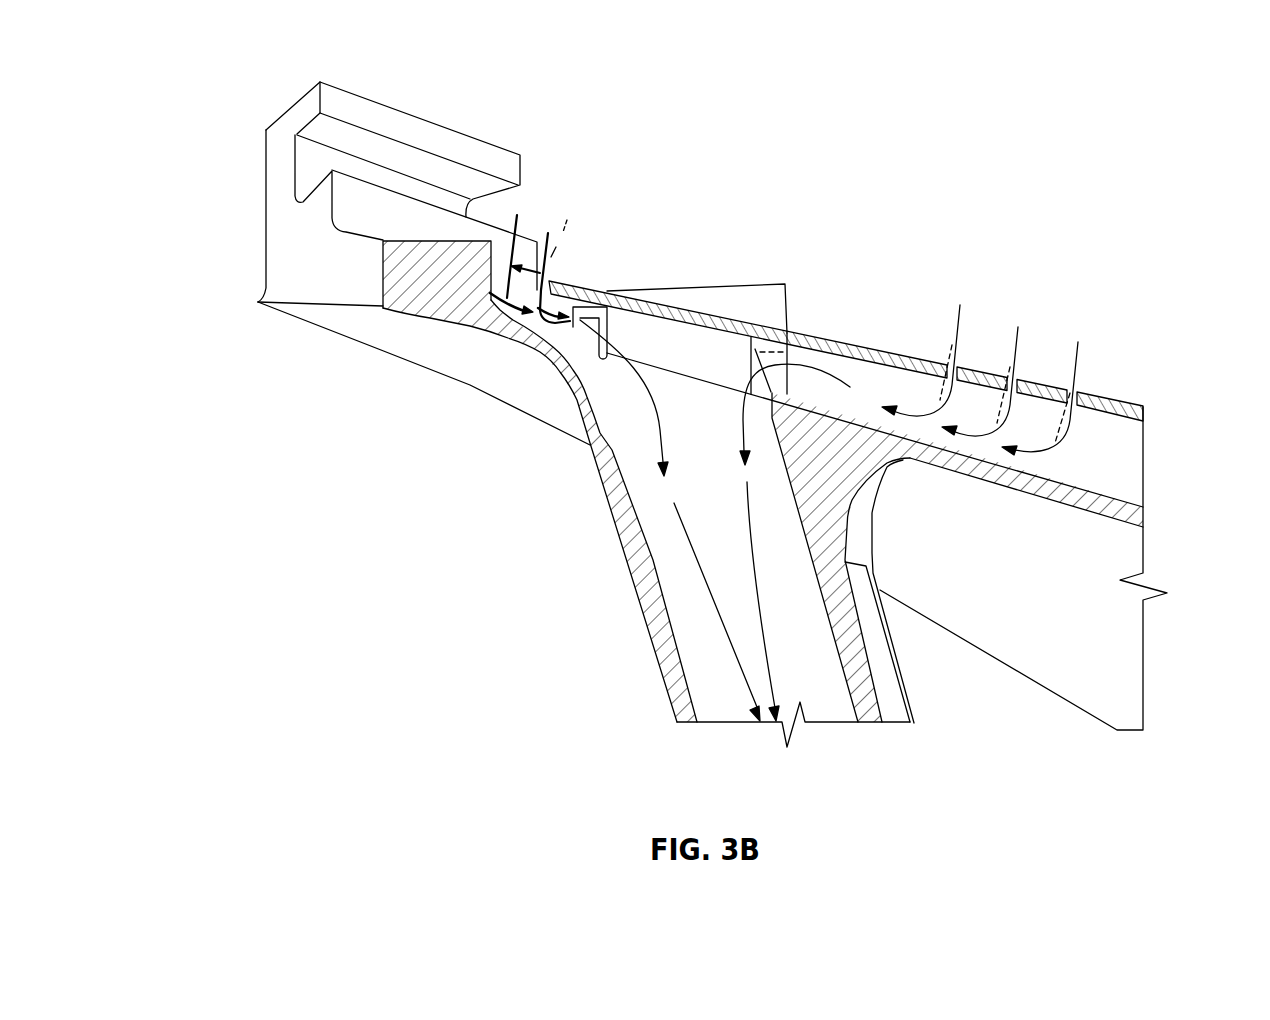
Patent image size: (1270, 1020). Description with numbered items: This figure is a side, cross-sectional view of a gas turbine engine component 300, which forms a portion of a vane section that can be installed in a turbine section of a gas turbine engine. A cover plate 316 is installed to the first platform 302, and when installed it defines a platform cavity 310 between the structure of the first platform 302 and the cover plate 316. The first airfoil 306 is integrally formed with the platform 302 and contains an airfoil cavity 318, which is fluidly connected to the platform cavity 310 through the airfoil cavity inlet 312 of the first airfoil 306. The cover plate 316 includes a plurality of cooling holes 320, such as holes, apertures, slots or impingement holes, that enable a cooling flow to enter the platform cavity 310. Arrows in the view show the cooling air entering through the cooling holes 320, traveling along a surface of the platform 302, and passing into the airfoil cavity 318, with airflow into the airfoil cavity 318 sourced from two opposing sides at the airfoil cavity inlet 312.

The gas turbine engine component 300 is at (270, 42).
The first platform 302 is at (277, 283).
The first airfoil 306 is at (638, 641).
The platform cavity 310 is at (496, 308).
The airfoil cavity inlet 312 is at (640, 434).
The cover plate 316 is at (576, 287).
The airfoil cavity 318 is at (719, 432).
The cooling holes 320 is at (1135, 330).